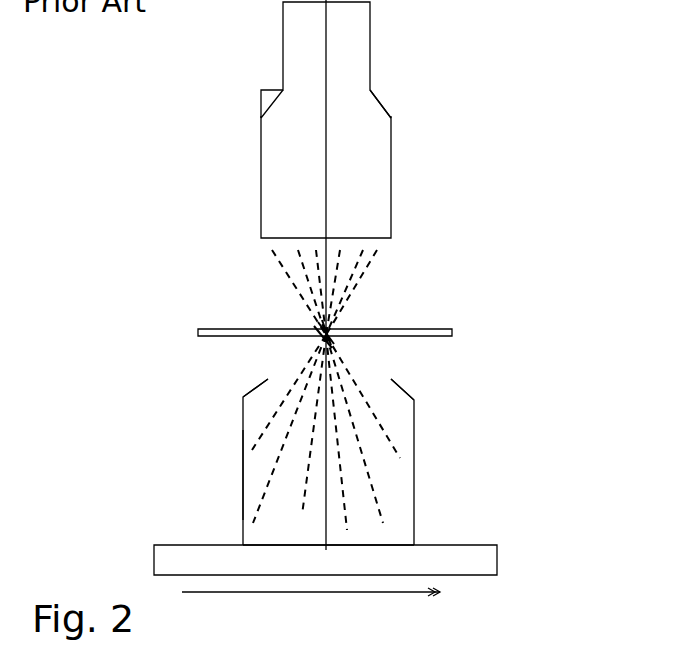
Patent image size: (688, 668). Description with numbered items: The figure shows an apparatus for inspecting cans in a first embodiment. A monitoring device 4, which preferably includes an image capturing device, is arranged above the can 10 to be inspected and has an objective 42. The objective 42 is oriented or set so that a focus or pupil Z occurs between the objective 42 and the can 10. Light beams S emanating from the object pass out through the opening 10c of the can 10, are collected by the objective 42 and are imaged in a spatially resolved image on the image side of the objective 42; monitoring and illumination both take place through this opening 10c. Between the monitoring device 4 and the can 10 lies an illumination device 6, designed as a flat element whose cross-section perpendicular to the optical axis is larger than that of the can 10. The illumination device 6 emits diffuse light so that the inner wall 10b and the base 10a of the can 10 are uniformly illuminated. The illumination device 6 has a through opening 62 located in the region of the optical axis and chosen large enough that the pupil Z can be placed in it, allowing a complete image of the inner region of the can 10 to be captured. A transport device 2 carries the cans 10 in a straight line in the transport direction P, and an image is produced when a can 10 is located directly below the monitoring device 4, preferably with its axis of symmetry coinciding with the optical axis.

The transport device 2 is at (428, 564).
The monitoring device 4 is at (407, 103).
The objective 42 is at (392, 207).
The illumination device 6 is at (265, 337).
The through opening 62 is at (328, 318).
The can 10 is at (413, 493).
The base 10a is at (380, 524).
The inner wall 10b is at (246, 470).
The opening 10c is at (373, 370).
The light beams S is at (365, 266).
The pupil region Z is at (318, 322).
The transport direction P is at (322, 593).